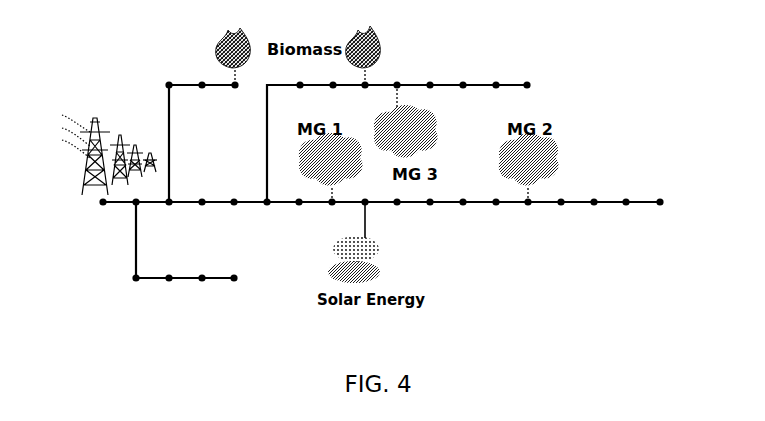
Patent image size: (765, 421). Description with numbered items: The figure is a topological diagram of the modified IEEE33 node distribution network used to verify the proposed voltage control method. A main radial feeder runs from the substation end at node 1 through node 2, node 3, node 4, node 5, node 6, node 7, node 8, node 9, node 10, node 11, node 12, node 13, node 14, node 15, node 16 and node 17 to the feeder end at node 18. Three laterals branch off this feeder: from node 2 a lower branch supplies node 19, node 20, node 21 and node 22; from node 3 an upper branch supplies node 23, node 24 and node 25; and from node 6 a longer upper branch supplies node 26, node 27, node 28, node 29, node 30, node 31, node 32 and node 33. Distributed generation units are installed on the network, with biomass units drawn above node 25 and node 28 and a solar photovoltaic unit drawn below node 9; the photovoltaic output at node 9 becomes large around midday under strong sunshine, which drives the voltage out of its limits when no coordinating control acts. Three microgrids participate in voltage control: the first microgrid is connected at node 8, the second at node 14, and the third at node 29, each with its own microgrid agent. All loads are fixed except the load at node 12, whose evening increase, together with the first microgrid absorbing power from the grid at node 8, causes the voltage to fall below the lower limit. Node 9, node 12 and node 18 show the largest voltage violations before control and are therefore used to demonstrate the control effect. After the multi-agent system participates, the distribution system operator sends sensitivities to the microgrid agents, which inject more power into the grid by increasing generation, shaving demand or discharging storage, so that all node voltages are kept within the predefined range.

The node 1 is at (103, 215).
The node 2 is at (134, 215).
The node 3 is at (169, 215).
The node 4 is at (202, 215).
The node 5 is at (234, 215).
The node 6 is at (267, 215).
The node 7 is at (299, 215).
The node 8 is at (332, 215).
The node 9 is at (359, 215).
The node 10 is at (393, 215).
The node 11 is at (426, 215).
The node 12 is at (459, 215).
The node 13 is at (492, 215).
The node 14 is at (525, 215).
The node 15 is at (562, 215).
The node 16 is at (595, 215).
The node 17 is at (627, 215).
The node 18 is at (660, 215).
The node 19 is at (138, 293).
The node 20 is at (171, 293).
The node 21 is at (204, 293).
The node 22 is at (236, 293).
The node 23 is at (176, 97).
The node 24 is at (205, 97).
The node 25 is at (236, 97).
The node 26 is at (300, 97).
The node 27 is at (333, 97).
The node 28 is at (365, 97).
The node 29 is at (391, 97).
The node 30 is at (432, 97).
The node 31 is at (464, 97).
The node 32 is at (497, 97).
The node 33 is at (528, 97).